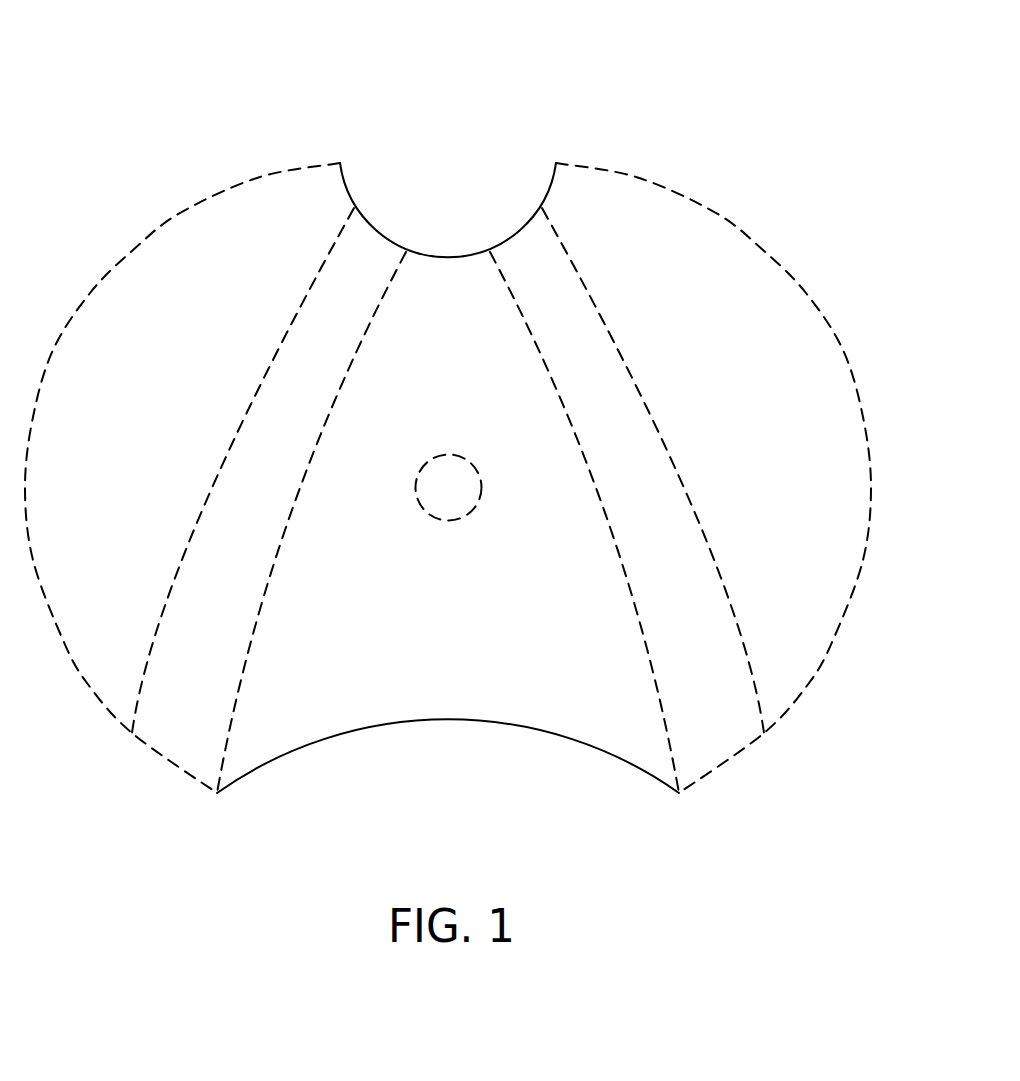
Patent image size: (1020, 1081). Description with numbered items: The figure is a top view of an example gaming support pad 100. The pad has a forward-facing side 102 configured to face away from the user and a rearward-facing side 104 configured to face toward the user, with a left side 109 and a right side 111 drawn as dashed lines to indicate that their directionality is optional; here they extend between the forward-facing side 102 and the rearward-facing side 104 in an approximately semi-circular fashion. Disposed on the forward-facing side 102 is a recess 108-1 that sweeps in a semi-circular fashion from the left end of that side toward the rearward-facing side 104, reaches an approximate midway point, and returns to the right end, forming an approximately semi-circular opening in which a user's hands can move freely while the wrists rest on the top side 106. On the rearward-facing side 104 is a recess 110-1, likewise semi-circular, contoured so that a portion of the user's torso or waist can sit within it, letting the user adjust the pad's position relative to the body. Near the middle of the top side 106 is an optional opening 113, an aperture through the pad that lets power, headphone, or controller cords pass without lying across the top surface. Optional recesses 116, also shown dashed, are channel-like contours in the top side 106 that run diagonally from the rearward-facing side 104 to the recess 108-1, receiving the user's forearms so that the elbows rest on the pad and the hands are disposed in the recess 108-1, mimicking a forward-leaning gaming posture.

The gaming support pad 100 is at (749, 63).
The forward-facing side 102 is at (422, 77).
The rearward-facing side 104 is at (347, 786).
The top side 106 is at (301, 185).
The recess 108-1 is at (425, 256).
The left side 109 is at (88, 297).
The recess 110-1 is at (473, 715).
The right side 111 is at (797, 283).
The opening 113 is at (438, 518).
The recesses 116 is at (223, 641).